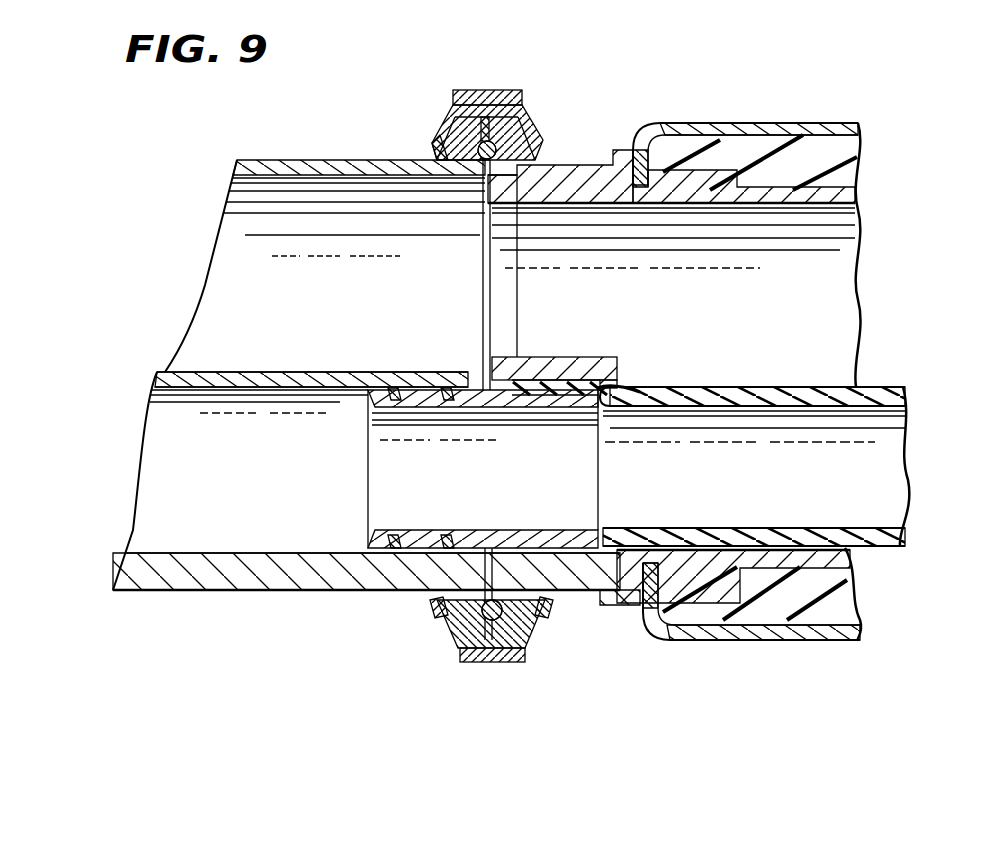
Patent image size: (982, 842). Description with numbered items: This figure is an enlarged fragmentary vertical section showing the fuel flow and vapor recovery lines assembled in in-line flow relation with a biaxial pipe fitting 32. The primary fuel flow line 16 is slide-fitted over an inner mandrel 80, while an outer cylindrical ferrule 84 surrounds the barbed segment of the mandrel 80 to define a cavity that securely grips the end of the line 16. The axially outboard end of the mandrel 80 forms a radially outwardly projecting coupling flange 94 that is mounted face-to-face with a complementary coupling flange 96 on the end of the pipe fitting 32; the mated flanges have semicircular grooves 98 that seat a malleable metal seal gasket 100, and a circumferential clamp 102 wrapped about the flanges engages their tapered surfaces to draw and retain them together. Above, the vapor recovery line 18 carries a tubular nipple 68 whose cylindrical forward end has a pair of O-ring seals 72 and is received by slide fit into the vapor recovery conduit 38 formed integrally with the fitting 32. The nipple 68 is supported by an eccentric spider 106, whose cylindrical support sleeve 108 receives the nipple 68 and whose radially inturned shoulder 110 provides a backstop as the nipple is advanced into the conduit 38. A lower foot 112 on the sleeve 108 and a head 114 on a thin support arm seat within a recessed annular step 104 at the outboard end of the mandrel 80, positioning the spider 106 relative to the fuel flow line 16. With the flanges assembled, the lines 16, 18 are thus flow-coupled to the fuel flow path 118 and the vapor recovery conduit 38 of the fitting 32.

The primary fuel flow line 16 is at (822, 152).
The vapor recovery line 18 is at (765, 395).
The pipe fitting 32 is at (190, 618).
The vapor recovery conduit 38 is at (160, 445).
The tubular nipple 68 is at (395, 523).
The O-ring seals 72 is at (398, 390).
The inner mandrel 80 is at (748, 197).
The outer cylindrical ferrule 84 is at (768, 123).
The coupling flange 94 is at (535, 162).
The coupling flange 96 is at (432, 150).
The semicircular grooves 98 is at (440, 632).
The seal gasket 100 is at (455, 110).
The circumferential clamp 102 is at (487, 90).
The recessed annular step 104 is at (503, 298).
The eccentric spider 106 is at (618, 340).
The cylindrical support sleeve 108 is at (557, 357).
The radially inturned shoulder 110 is at (618, 382).
The lower foot 112 is at (527, 610).
The head 114 is at (492, 193).
The fuel flow path 118 is at (248, 276).